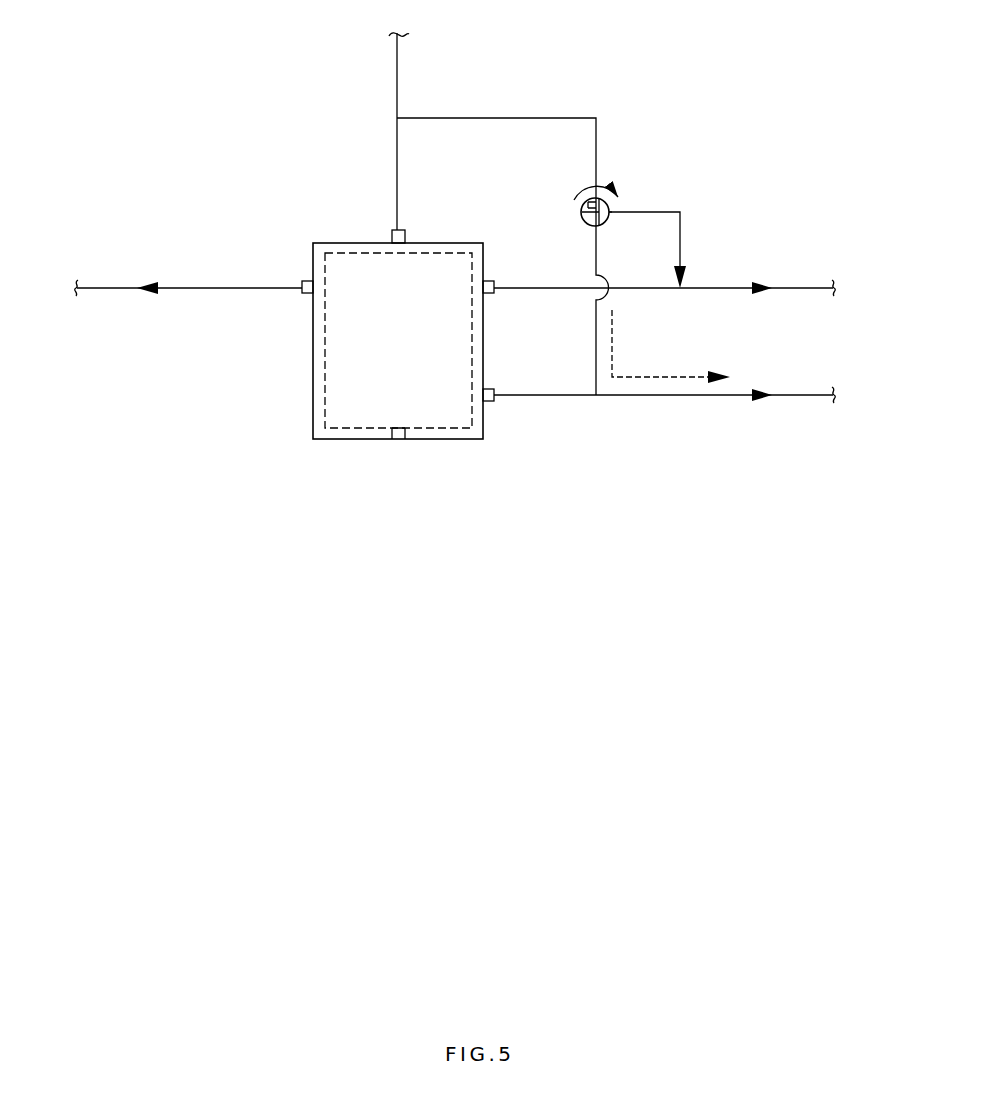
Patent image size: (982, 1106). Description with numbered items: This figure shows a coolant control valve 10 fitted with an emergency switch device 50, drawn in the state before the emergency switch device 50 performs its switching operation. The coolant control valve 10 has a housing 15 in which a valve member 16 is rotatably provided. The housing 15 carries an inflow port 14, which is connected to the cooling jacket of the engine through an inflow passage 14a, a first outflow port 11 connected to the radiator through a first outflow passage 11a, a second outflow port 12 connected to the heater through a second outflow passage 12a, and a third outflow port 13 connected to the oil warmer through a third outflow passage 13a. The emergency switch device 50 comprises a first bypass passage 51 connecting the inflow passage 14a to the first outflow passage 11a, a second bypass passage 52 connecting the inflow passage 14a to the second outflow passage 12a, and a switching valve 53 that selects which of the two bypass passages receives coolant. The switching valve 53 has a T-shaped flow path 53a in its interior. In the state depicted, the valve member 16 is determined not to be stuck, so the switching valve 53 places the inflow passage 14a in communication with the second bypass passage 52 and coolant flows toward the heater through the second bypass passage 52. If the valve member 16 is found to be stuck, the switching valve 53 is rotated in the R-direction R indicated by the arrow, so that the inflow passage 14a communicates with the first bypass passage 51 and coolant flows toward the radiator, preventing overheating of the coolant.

The coolant control valve 10 is at (358, 422).
The first outflow port 11 is at (490, 297).
The first outflow passage 11a is at (800, 292).
The second outflow port 12 is at (490, 404).
The second outflow passage 12a is at (800, 400).
The third outflow port 13 is at (302, 282).
The third outflow passage 13a is at (187, 286).
The inflow port 14 is at (393, 228).
The inflow passage 14a is at (400, 60).
The housing 15 is at (313, 340).
The valve member 16 is at (325, 398).
The emergency switch device 50 is at (581, 207).
The first bypass passage 51 is at (681, 218).
The second bypass passage 52 is at (597, 335).
The switching valve 53 is at (581, 208).
The T-shaped flow path 53a is at (606, 222).
The R-direction R is at (606, 190).